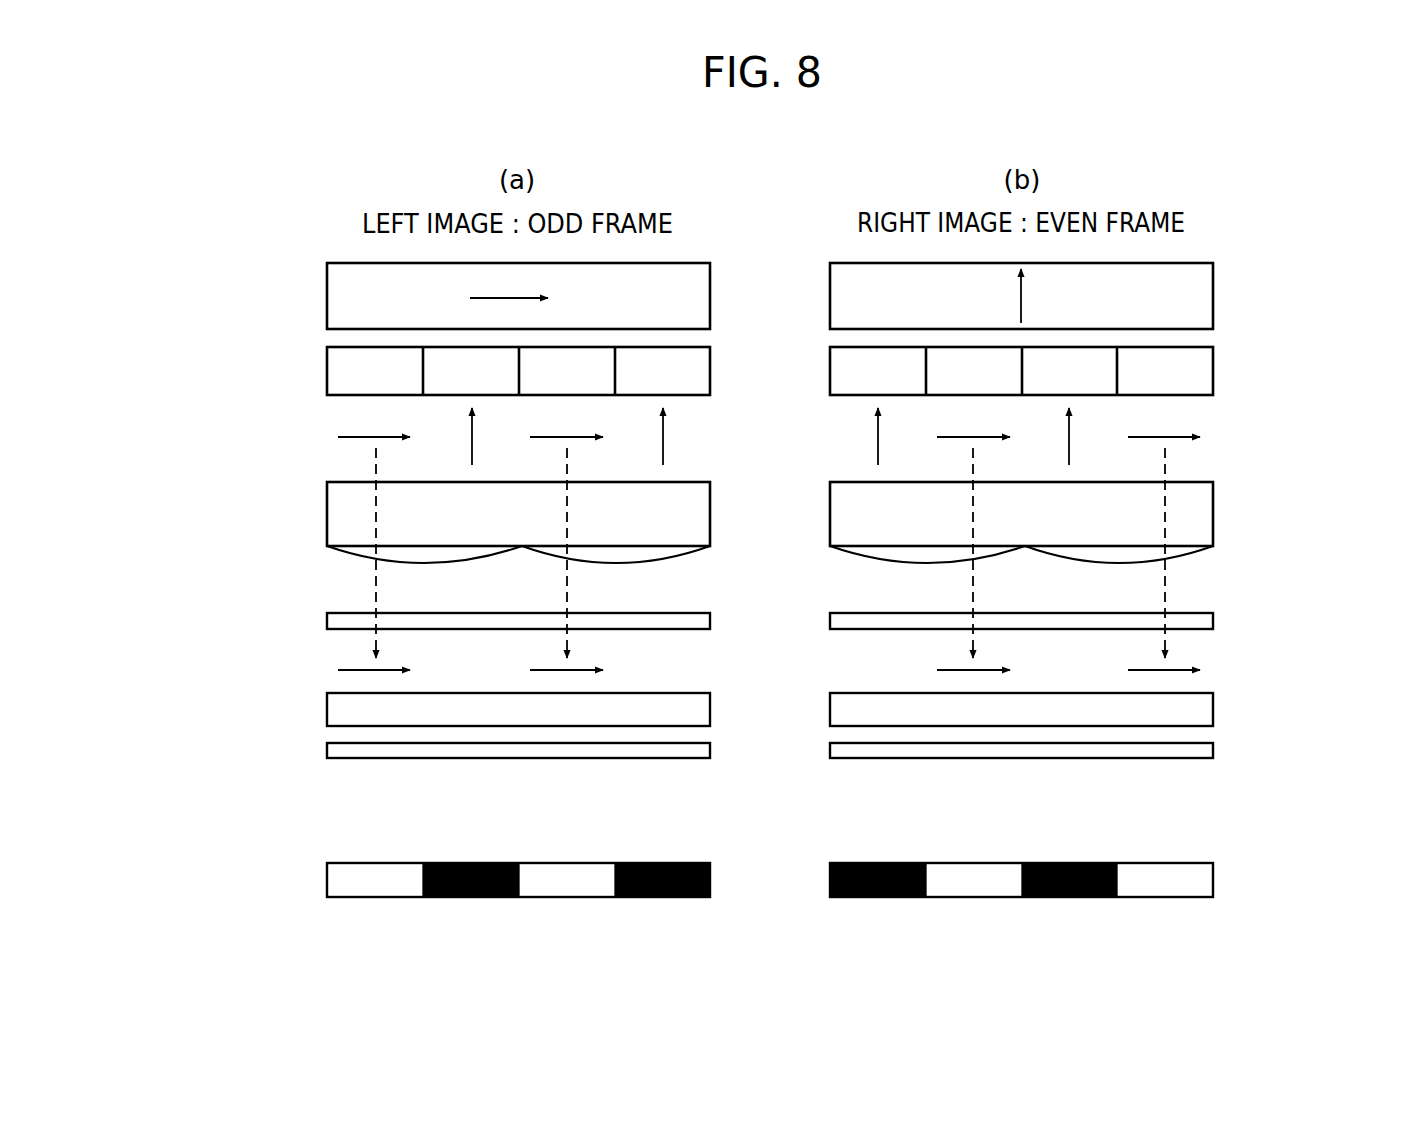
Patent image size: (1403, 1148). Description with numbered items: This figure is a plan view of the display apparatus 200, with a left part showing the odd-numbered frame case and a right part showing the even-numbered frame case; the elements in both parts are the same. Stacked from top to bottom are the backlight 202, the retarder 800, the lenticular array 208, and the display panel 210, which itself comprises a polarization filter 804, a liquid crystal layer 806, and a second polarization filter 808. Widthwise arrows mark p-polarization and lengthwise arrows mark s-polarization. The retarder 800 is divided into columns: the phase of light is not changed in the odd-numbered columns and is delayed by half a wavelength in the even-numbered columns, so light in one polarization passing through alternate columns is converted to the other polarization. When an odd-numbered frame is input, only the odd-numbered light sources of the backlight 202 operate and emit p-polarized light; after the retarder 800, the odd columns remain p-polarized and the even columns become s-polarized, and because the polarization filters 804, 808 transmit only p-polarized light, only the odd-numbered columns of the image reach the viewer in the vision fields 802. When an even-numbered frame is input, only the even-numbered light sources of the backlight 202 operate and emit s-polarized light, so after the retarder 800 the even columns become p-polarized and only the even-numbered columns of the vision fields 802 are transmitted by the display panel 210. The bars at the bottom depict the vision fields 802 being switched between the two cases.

The display apparatus 200 is at (318, 263).
The backlight 202 is at (710, 297).
The lenticular array 208 is at (710, 514).
The display panel 210 is at (720, 615).
The retarder 800 is at (710, 371).
The vision fields 802 is at (710, 880).
The polarization filter 804 is at (1213, 621).
The liquid crystal layer 806 is at (1213, 712).
The polarization filter 808 is at (1213, 751).